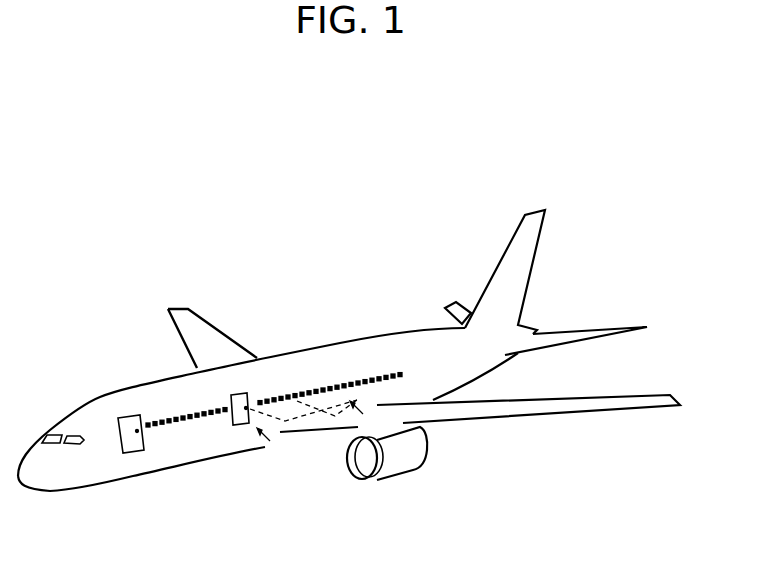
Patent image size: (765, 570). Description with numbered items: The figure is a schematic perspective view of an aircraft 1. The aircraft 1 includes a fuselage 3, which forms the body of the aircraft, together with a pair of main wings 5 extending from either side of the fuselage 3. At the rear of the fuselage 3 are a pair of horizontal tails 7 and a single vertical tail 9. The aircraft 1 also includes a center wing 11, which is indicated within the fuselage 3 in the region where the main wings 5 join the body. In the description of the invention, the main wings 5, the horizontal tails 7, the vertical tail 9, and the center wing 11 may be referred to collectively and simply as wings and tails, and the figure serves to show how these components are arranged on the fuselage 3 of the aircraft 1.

The aircraft 1 is at (356, 199).
The fuselage 3 is at (295, 350).
The main wings 5 is at (197, 330).
The horizontal tails 7 is at (452, 305).
The vertical tail 9 is at (532, 227).
The center wing 11 is at (318, 390).